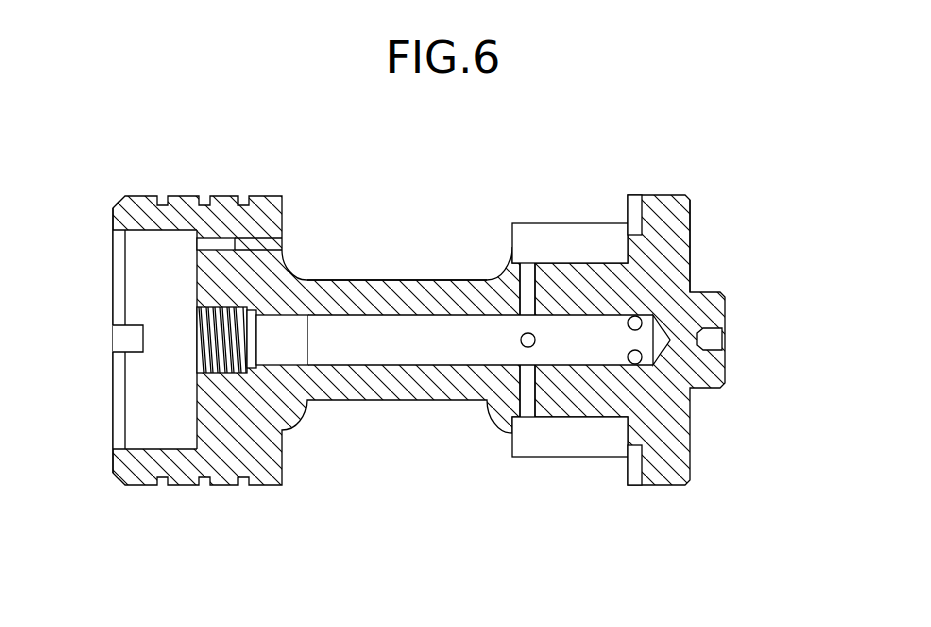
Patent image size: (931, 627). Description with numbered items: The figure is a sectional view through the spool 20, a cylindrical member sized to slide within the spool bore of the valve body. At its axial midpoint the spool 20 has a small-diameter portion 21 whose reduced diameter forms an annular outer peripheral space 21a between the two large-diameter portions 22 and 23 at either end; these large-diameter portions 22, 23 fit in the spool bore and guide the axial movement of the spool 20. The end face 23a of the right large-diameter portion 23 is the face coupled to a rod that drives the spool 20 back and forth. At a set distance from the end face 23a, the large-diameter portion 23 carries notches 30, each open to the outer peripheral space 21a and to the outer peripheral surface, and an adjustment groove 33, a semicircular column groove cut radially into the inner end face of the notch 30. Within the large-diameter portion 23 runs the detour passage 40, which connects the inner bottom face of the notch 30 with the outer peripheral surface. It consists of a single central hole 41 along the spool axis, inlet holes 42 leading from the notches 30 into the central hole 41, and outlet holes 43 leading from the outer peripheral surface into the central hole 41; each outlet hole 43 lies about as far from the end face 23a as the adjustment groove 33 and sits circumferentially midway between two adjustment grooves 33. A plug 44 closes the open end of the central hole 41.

The spool 20 is at (310, 553).
The small-diameter portion 21 is at (424, 385).
The outer peripheral space 21a is at (326, 253).
The large-diameter portion 22 is at (267, 487).
The large-diameter portion 23 is at (671, 487).
The end face 23a is at (696, 243).
The notch 30 is at (620, 248).
The adjustment groove 33 is at (640, 214).
The detour passage 40 is at (415, 160).
The central hole 41 is at (412, 328).
The inlet hole 42 is at (522, 396).
The outlet hole 43 is at (628, 356).
The plug 44 is at (217, 363).